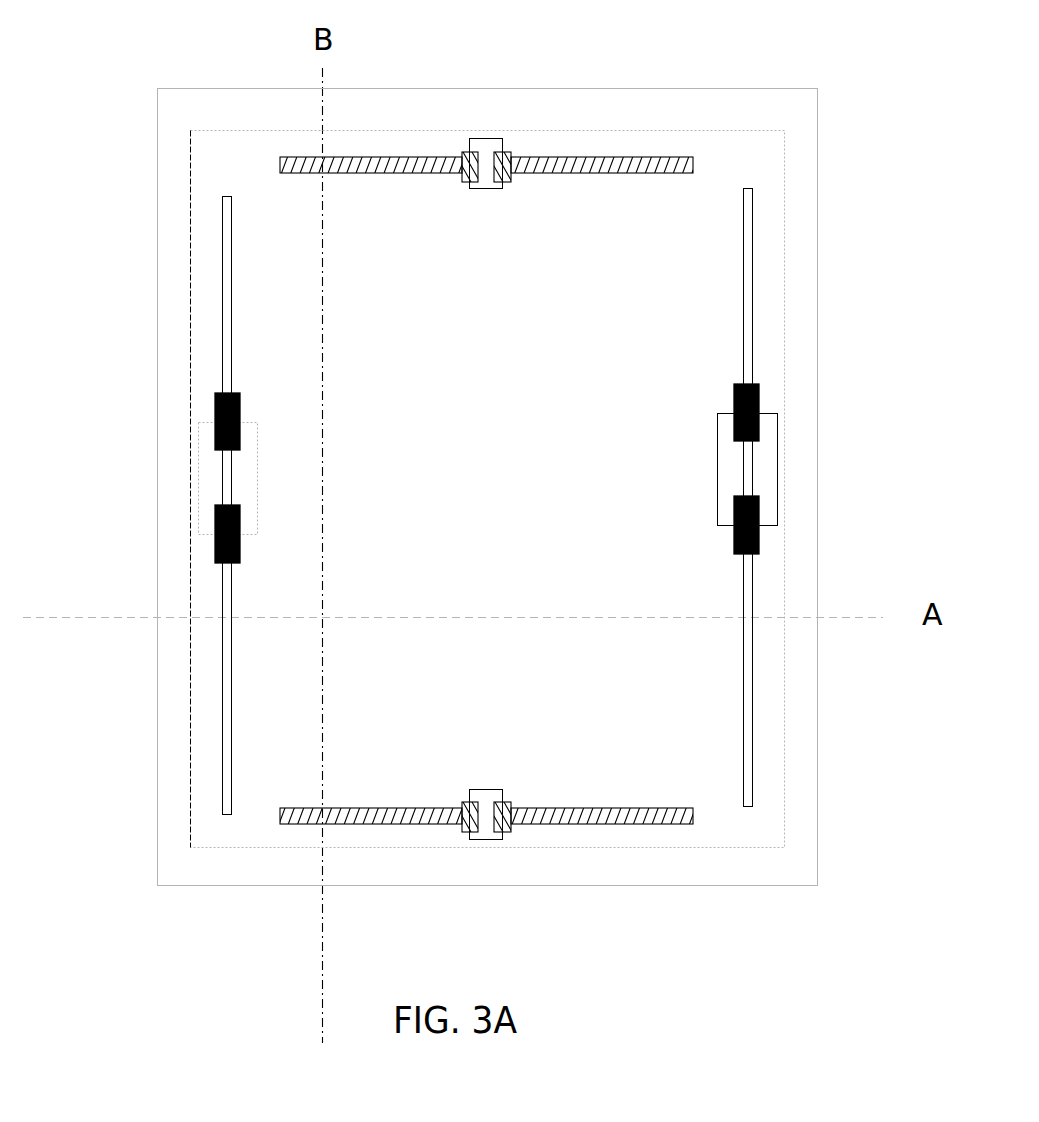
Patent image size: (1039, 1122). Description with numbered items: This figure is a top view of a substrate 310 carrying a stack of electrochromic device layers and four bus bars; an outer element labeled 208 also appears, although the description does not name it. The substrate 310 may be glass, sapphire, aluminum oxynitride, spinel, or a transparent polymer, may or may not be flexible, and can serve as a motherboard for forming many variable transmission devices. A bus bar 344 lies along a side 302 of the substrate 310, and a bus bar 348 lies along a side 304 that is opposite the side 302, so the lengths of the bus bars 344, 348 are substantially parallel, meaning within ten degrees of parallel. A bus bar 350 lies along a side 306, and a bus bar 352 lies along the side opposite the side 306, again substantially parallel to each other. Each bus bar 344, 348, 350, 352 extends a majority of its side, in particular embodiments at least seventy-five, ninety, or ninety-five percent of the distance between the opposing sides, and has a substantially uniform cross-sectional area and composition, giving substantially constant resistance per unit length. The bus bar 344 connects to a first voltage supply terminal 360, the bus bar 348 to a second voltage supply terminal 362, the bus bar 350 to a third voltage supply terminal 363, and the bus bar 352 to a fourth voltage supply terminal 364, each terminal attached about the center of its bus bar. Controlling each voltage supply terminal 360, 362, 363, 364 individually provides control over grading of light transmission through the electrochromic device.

The device 208 is at (603, 899).
The side 302 is at (139, 351).
The side 304 is at (837, 336).
The side 306 is at (692, 79).
The substrate 310 is at (172, 188).
The bus bar 344 is at (250, 358).
The bus bar 348 is at (723, 313).
The bus bar 350 is at (358, 188).
The bus bar 352 is at (452, 797).
The first voltage supply terminal 360 is at (222, 466).
The second voltage supply terminal 362 is at (735, 467).
The third voltage supply terminal 363 is at (500, 188).
The fourth voltage supply terminal 364 is at (484, 789).